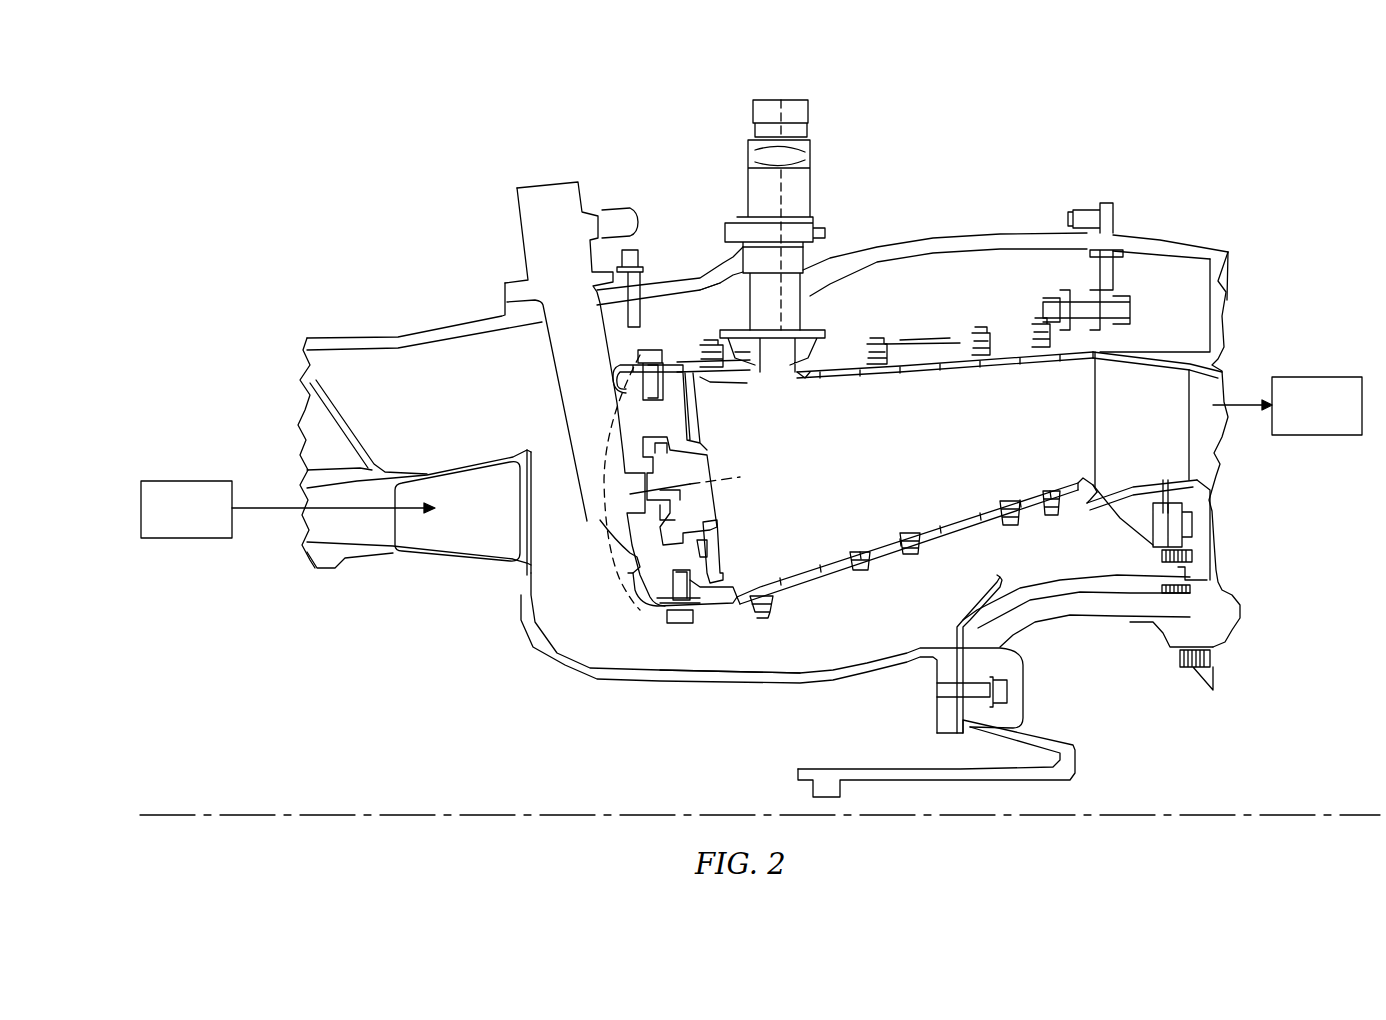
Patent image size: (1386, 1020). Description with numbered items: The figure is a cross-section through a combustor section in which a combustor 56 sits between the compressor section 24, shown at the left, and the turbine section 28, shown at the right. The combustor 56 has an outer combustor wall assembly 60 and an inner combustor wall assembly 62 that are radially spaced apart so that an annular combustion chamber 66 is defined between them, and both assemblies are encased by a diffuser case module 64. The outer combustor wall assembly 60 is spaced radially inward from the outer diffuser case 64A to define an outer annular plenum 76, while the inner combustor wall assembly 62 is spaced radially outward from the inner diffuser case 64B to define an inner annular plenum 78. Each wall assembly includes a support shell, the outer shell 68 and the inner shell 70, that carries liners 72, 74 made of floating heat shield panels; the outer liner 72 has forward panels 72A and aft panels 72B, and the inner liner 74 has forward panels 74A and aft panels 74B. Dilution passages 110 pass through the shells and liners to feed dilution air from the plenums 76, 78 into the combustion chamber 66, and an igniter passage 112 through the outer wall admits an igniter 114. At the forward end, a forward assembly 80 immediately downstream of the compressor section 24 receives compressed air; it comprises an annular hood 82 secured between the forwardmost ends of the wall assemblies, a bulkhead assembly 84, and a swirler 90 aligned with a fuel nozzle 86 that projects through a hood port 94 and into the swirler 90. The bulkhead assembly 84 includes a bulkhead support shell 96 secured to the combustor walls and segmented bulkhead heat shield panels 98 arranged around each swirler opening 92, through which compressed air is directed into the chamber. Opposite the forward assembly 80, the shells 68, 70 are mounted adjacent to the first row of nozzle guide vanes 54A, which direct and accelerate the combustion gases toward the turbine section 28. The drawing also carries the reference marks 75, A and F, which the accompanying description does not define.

The compressor section 24 is at (206, 523).
The turbine section 28 is at (1332, 419).
The Nozzle Guide Vanes 54A is at (1157, 431).
The combustor 56 is at (1076, 160).
The outer combustor wall assembly 60 is at (955, 340).
The inner combustor wall assembly 62 is at (900, 570).
The diffuser case module 64 is at (932, 230).
The outer diffuser case 64A is at (1010, 238).
The inner diffuser case 64B is at (793, 682).
The annular combustion chamber 66 is at (915, 473).
The outer support shell 68 is at (905, 360).
The inner support shell 70 is at (990, 534).
The outer liner 72 is at (905, 382).
The forward panels 72A is at (810, 380).
The aft panels 72B is at (968, 372).
The inner liner 74 is at (925, 512).
The forward panels 74A is at (808, 560).
The aft panels 74B is at (980, 497).
The support 75 is at (1060, 520).
The outer annular plenum 76 is at (874, 303).
The inner annular plenum 78 is at (855, 650).
The forward assembly 80 is at (625, 622).
The annular hood 82 is at (630, 576).
The bulkhead assembly 84 is at (712, 422).
The fuel nozzle 86 is at (580, 308).
The swirler 90 is at (718, 512).
The swirler opening 92 is at (720, 450).
The hood port 94 is at (625, 554).
The bulkhead support shell 96 is at (645, 590).
The bulkhead heat shield panels 98 is at (720, 549).
The dilution passages 110 is at (944, 343).
The igniter passage 112 is at (695, 354).
The igniter 114 is at (783, 298).
The engine central axis A is at (627, 812).
The fuel injector axis F is at (735, 470).